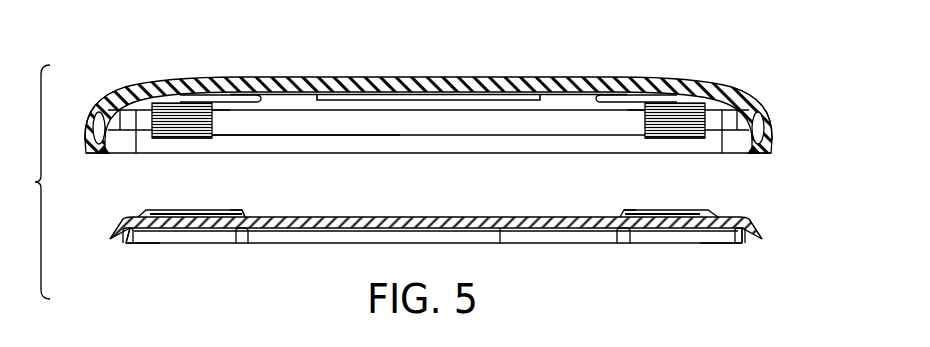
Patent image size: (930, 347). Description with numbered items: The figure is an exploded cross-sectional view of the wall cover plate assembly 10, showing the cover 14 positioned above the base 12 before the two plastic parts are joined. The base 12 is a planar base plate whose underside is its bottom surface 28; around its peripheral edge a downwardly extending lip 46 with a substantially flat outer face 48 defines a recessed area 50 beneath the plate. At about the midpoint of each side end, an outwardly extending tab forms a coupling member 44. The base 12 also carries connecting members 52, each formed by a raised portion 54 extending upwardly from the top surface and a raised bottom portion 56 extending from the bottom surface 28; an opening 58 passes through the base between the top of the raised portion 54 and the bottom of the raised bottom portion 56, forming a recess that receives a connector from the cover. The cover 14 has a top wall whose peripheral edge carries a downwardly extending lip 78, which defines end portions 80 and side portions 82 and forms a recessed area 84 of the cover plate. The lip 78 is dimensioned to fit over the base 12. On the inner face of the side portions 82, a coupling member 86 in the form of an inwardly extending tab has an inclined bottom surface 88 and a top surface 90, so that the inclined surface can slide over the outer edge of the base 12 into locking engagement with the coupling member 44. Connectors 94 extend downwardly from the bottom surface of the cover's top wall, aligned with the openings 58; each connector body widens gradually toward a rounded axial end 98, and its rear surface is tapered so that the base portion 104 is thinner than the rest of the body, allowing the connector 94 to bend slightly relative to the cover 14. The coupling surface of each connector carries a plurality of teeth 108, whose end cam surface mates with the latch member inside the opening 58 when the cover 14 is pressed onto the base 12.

The wall cover plate assembly 10 is at (357, 74).
The base 12 is at (752, 210).
The cover 14 is at (690, 77).
The bottom surface 28 is at (500, 232).
The coupling member 44 is at (97, 235).
The lip 46 is at (116, 244).
The outer face 48 is at (112, 244).
The recessed area 50 is at (318, 234).
The connecting members 52 is at (249, 203).
The raised portion 54 is at (158, 210).
The raised bottom portion 56 is at (247, 240).
The opening 58 is at (428, 50).
The lip 78 is at (94, 154).
The end portions 80 is at (87, 128).
The side portions 82 is at (404, 143).
The recessed area 84 is at (311, 146).
The coupling member 86 is at (102, 164).
The inclined bottom surface 88 is at (108, 153).
The top surface 90 is at (102, 118).
The connectors 94 is at (224, 120).
The axial end 98 is at (186, 139).
The base portion 104 is at (222, 97).
The teeth 108 is at (180, 117).